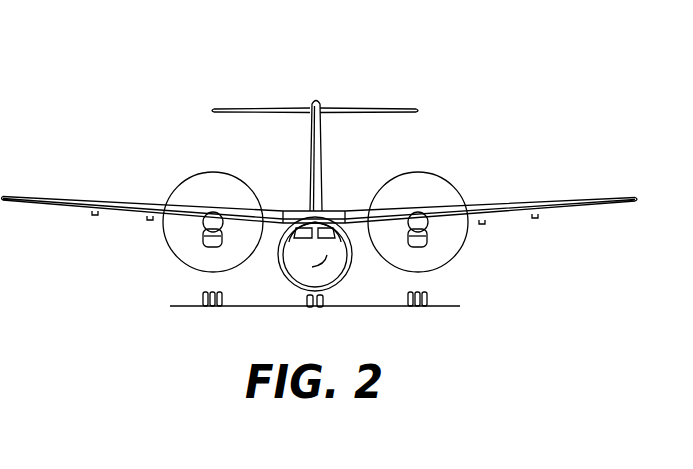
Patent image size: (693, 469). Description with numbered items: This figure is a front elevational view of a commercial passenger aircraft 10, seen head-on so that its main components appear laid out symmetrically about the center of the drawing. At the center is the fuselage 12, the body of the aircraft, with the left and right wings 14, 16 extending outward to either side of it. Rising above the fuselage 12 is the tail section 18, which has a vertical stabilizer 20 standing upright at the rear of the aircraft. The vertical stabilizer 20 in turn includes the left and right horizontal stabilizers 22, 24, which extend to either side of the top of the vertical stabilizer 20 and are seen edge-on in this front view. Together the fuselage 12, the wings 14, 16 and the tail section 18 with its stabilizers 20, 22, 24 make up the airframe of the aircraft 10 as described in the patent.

The commercial passenger aircraft 10 is at (158, 106).
The fuselage 12 is at (285, 278).
The left wing 14 is at (560, 210).
The right wing 16 is at (63, 208).
The tail section 18 is at (343, 76).
The vertical stabilizer 20 is at (322, 165).
The left horizontal stabilizer 22 is at (373, 108).
The right horizontal stabilizer 24 is at (265, 108).